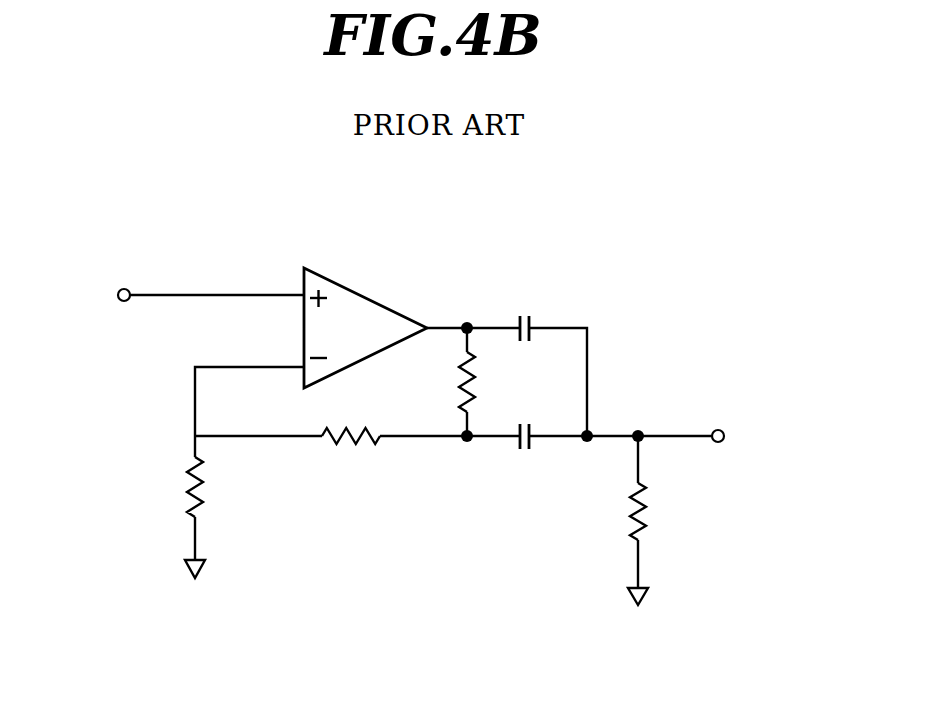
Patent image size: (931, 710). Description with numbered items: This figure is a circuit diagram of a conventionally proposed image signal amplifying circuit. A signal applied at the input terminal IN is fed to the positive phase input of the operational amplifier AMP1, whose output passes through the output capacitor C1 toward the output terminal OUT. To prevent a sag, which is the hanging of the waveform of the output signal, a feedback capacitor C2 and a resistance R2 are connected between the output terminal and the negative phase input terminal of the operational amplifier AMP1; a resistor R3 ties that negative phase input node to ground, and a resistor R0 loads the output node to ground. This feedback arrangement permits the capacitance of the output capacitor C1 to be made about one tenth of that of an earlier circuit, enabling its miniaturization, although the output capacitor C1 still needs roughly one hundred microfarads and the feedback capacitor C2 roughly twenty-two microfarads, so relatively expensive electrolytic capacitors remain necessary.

The input terminal IN is at (122, 288).
The output terminal OUT is at (721, 430).
The operational amplifier AMP1 is at (365, 298).
The output capacitor C1 is at (526, 313).
The feedback capacitor C2 is at (526, 457).
The resistance R2 is at (351, 457).
The resistor R3 is at (221, 507).
The resistor R0 is at (664, 520).